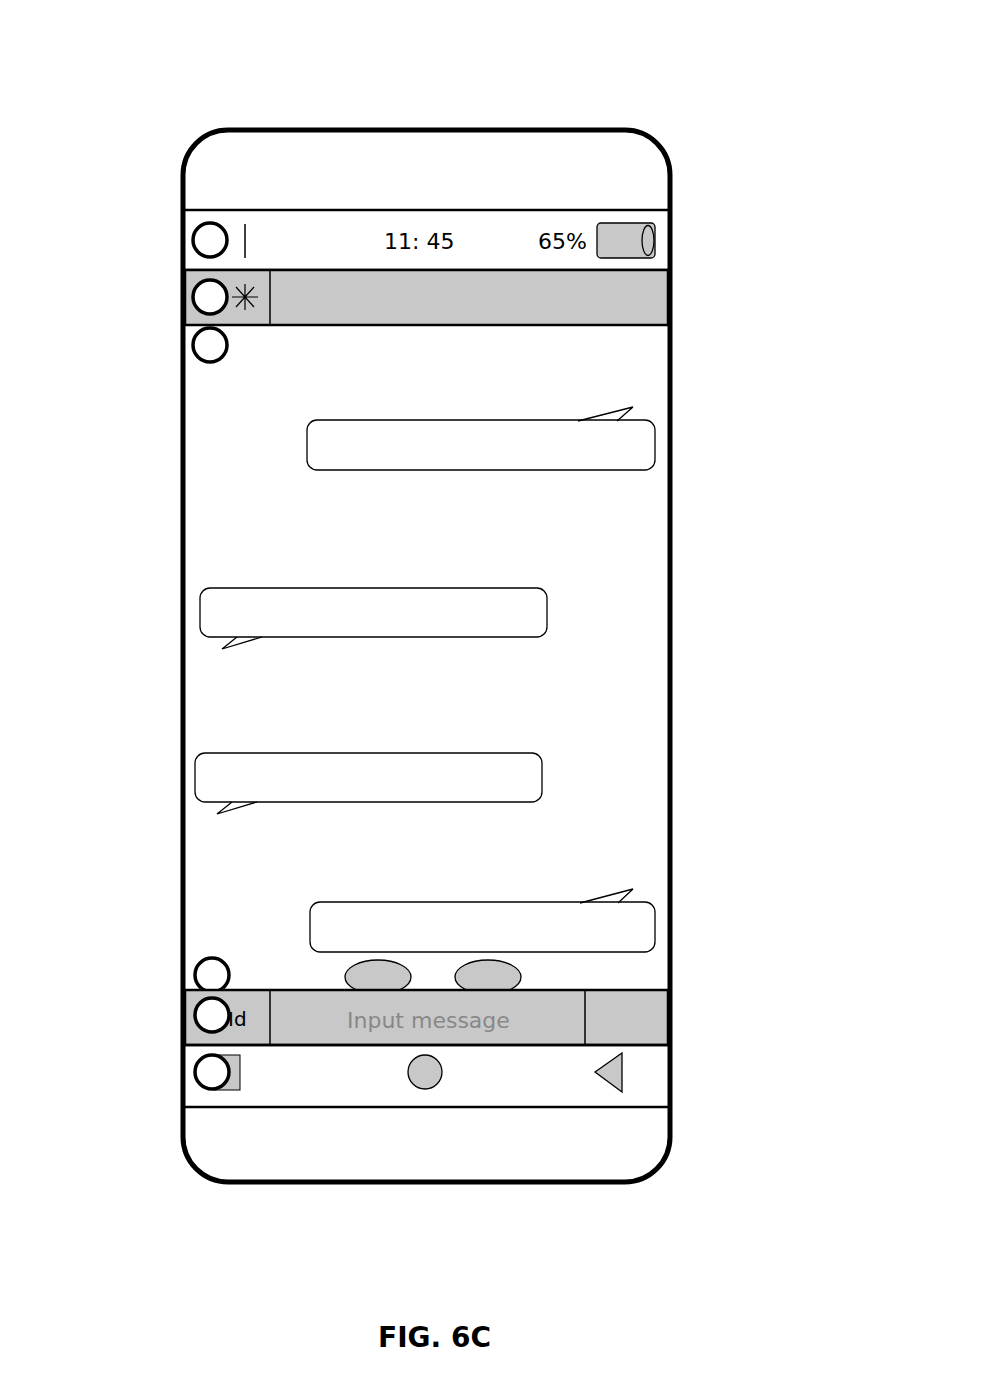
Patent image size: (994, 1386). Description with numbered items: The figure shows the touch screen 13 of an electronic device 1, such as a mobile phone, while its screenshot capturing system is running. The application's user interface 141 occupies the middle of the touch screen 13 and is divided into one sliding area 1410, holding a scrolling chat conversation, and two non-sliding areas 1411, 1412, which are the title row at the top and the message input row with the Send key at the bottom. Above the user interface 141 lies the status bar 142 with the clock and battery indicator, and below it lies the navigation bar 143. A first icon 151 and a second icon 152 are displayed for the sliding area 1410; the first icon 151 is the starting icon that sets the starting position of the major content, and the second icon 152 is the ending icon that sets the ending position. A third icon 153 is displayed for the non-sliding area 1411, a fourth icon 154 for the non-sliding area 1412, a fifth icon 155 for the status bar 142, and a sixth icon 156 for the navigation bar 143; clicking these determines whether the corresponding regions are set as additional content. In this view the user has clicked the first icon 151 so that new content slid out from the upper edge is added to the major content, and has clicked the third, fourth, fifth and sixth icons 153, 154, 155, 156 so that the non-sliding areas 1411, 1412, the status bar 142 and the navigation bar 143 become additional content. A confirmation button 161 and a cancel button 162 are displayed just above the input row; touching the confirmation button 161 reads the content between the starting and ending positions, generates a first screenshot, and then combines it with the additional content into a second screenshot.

The electronic device 1 is at (441, 100).
The touch screen 13 is at (637, 573).
The user interface 141 is at (492, 675).
The sliding area 1410 is at (650, 803).
The non-sliding area 1411 is at (640, 300).
The non-sliding area 1412 is at (635, 1000).
The status bar 142 is at (622, 222).
The navigation bar 143 is at (650, 1069).
The first icon 151 is at (190, 334).
The second icon 152 is at (200, 960).
The third icon 153 is at (195, 284).
The fourth icon 154 is at (195, 1006).
The fifth icon 155 is at (200, 228).
The sixth icon 156 is at (195, 1062).
The confirmation button 161 is at (388, 995).
The cancel button 162 is at (487, 985).